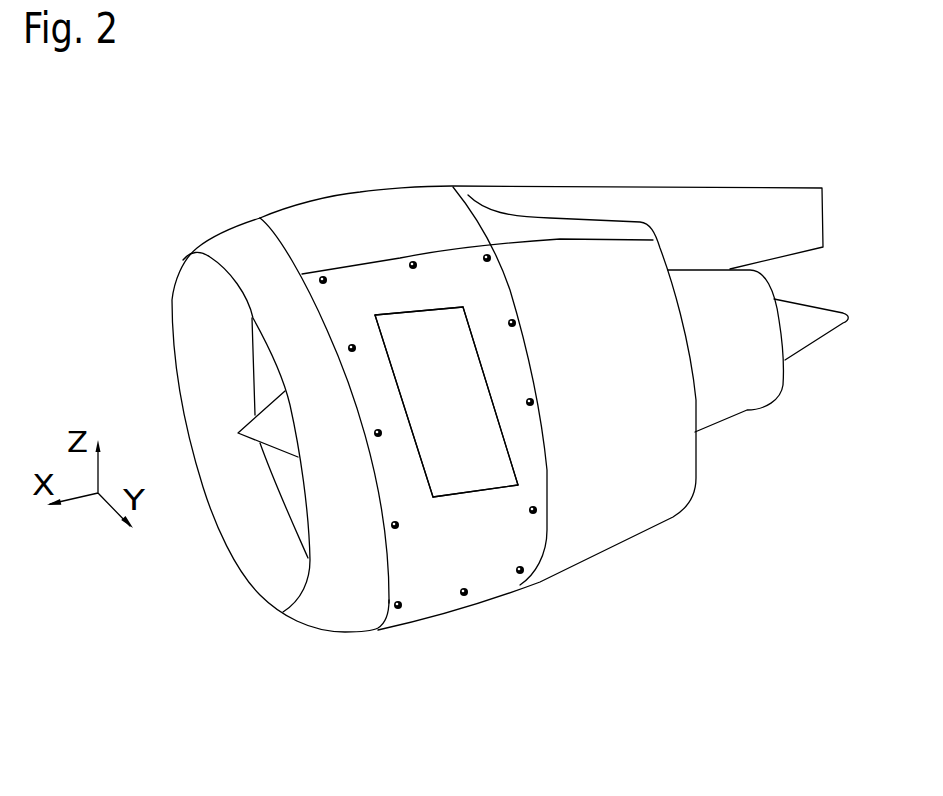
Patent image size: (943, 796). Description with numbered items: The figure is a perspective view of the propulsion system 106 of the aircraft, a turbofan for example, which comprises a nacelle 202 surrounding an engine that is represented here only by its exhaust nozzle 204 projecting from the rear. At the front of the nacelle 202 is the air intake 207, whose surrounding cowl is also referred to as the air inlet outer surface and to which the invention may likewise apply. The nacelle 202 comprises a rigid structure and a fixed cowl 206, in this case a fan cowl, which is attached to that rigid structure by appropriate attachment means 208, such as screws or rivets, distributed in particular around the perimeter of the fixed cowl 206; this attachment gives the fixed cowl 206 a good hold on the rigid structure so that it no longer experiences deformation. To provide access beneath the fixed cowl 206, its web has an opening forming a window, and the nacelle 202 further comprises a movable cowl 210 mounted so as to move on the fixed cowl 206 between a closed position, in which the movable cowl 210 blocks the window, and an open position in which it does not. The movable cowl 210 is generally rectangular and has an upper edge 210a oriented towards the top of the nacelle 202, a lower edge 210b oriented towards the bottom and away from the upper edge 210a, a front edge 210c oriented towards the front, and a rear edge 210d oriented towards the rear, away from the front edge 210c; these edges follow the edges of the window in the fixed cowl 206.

The propulsion system 106 is at (212, 186).
The nacelle 202 is at (676, 591).
The exhaust nozzle 204 is at (720, 410).
The fixed cowl 206 is at (425, 590).
The air intake 207 is at (238, 373).
The attachment means 208 is at (520, 575).
The movable cowl 210 is at (481, 413).
The upper edge 210a is at (415, 313).
The lower edge 210b is at (480, 492).
The front edge 210c is at (422, 450).
The rear edge 210d is at (497, 393).